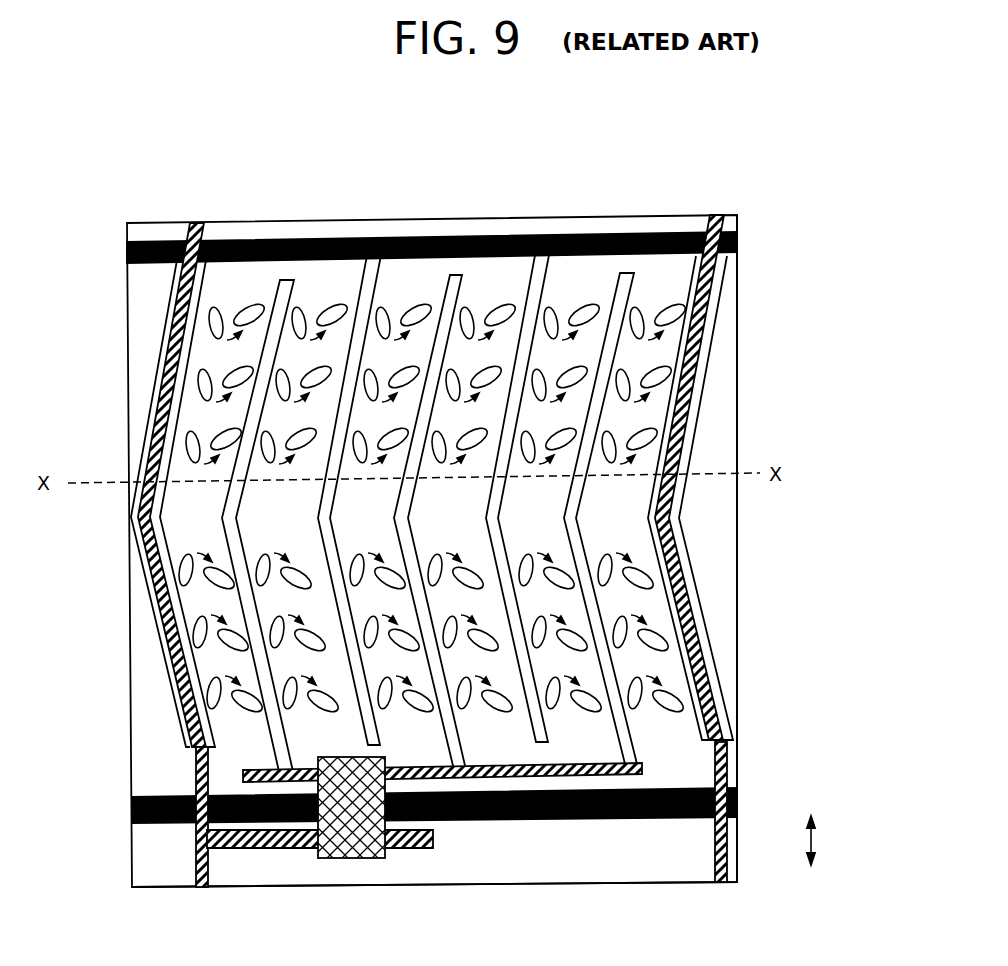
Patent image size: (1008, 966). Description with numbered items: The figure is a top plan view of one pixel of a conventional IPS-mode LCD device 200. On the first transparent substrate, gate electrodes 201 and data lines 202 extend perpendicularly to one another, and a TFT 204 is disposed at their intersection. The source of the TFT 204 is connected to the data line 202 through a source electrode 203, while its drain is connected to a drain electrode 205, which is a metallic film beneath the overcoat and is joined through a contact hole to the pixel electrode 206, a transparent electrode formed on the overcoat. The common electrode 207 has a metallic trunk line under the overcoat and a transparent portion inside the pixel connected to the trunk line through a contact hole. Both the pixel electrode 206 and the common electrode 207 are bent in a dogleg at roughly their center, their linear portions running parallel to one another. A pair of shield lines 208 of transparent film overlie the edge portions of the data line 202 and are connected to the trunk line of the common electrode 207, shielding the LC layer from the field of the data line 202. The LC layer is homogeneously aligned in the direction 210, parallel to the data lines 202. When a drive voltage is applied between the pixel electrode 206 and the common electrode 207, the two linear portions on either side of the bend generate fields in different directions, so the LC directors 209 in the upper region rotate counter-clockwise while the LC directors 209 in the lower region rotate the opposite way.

The LCD device 200 is at (762, 160).
The gate electrode 201 is at (740, 798).
The data line 202 is at (724, 772).
The source electrode 203 is at (285, 848).
The TFT 204 is at (370, 846).
The drain electrode 205 is at (583, 775).
The pixel electrode 206 is at (458, 273).
The common electrode 207 is at (362, 283).
The shield line 208 is at (717, 328).
The LC director 209 is at (645, 432).
The initial orientation direction 210 is at (812, 840).